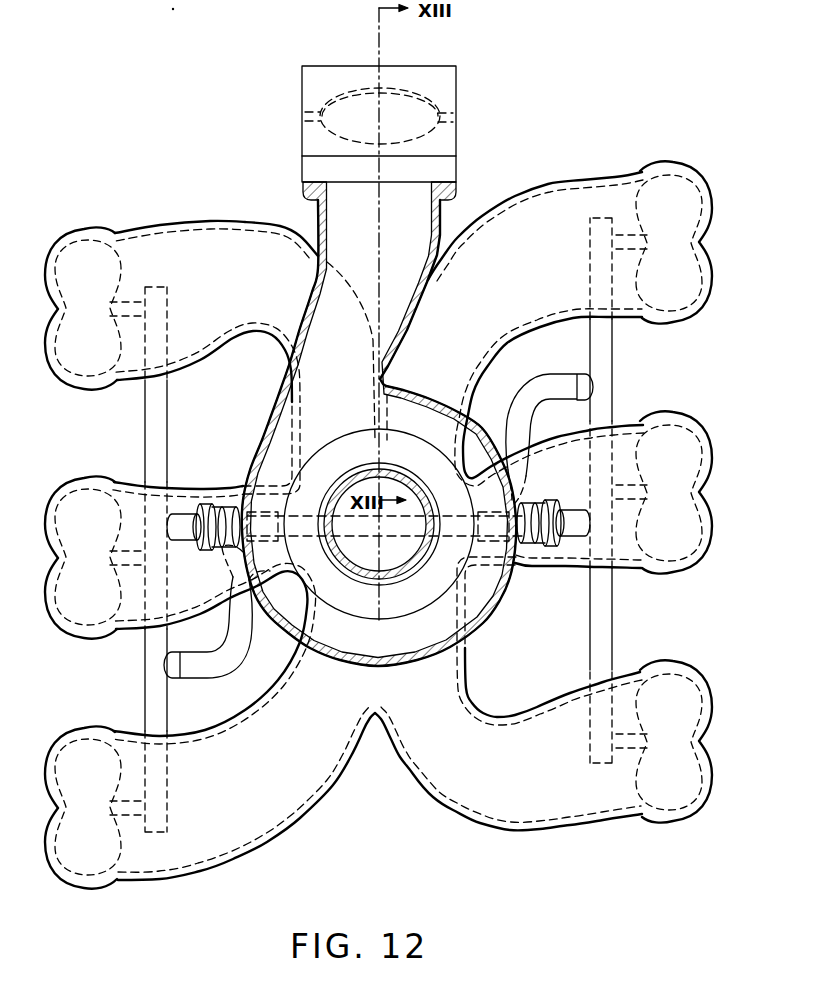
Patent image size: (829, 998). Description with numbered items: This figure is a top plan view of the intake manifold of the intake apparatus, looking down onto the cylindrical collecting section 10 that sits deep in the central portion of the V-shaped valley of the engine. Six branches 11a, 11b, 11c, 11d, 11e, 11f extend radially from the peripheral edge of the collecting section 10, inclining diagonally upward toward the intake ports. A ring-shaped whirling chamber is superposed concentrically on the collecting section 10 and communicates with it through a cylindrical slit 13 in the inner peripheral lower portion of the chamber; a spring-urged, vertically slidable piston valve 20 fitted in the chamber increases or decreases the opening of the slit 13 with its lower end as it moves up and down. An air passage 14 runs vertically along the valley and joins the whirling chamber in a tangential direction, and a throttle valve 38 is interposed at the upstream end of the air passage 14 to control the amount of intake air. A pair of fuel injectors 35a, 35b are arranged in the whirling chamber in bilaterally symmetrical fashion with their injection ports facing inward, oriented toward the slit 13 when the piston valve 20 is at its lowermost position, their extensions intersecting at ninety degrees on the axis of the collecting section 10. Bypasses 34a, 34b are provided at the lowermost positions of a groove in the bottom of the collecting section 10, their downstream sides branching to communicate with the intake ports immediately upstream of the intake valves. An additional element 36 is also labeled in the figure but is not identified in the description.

The collecting section 10 is at (318, 452).
The branch 11a is at (186, 230).
The branch 11b is at (118, 630).
The branch 11c is at (327, 795).
The branch 11d is at (433, 800).
The branch 11e is at (636, 570).
The branch 11f is at (565, 180).
The cylindrical slit 13 is at (325, 496).
The air passage 14 is at (340, 237).
The piston valve 20 is at (355, 472).
The bypass 34a is at (215, 675).
The bypass 34b is at (556, 385).
The fuel injector 35a is at (188, 504).
The fuel injector 35b is at (572, 548).
The shaft 36 is at (465, 567).
The throttle valve 38 is at (453, 100).